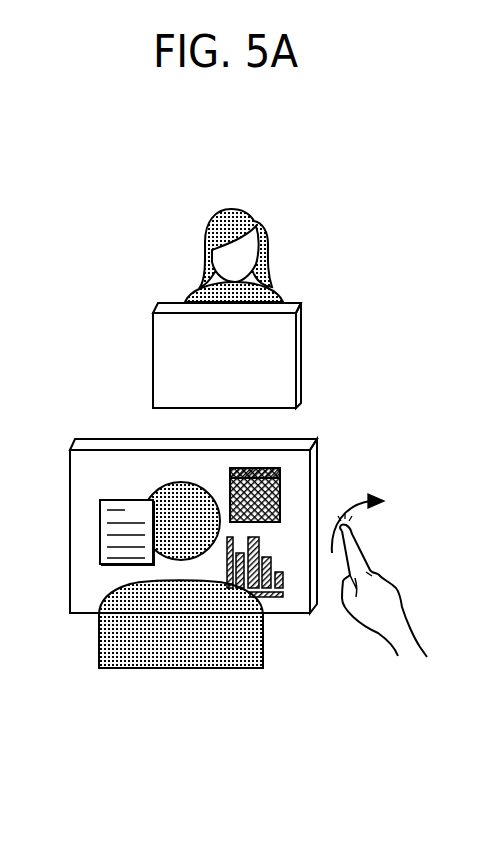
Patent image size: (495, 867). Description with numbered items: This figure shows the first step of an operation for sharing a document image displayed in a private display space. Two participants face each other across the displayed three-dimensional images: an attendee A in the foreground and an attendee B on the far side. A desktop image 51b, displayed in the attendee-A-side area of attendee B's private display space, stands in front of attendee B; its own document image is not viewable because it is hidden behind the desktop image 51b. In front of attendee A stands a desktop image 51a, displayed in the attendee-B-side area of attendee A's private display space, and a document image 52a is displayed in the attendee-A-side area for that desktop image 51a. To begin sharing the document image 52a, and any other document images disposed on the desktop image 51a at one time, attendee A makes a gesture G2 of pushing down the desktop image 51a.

The attendee B is at (234, 206).
The desktop image 51b is at (162, 302).
The desktop image 51a is at (118, 438).
The document image 52a is at (100, 538).
The attendee A is at (187, 670).
The gesture G2 is at (379, 528).